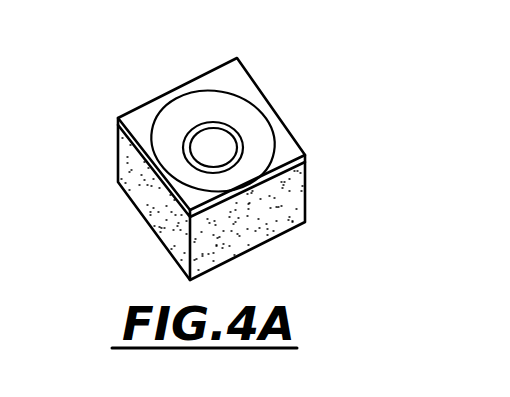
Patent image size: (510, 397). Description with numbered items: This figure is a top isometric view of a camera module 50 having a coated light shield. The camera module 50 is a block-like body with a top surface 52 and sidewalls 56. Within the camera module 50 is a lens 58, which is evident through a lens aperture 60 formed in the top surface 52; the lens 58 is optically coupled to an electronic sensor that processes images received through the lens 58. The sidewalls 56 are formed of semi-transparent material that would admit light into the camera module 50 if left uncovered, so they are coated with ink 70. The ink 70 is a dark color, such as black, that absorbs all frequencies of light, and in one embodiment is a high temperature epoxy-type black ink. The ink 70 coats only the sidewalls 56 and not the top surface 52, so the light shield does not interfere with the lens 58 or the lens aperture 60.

The camera module 50 is at (176, 157).
The top surface 52 is at (189, 125).
The sidewalls 56 is at (148, 183).
The lens 58 is at (207, 145).
The lens aperture 60 is at (226, 112).
The ink 70 is at (201, 199).